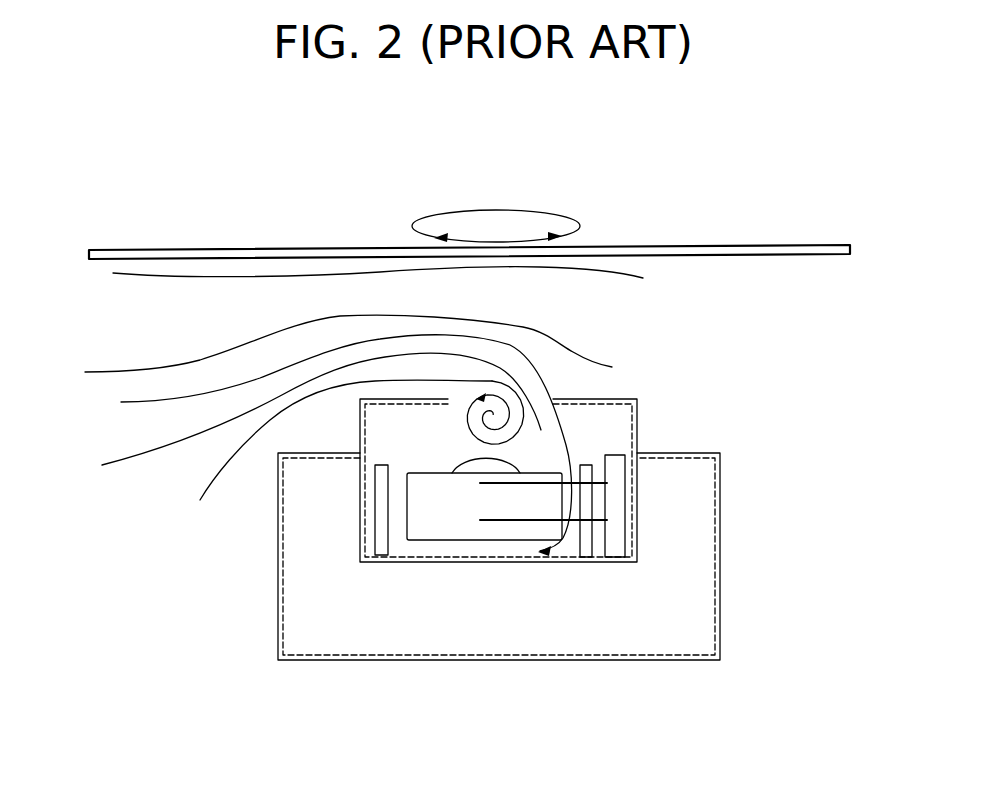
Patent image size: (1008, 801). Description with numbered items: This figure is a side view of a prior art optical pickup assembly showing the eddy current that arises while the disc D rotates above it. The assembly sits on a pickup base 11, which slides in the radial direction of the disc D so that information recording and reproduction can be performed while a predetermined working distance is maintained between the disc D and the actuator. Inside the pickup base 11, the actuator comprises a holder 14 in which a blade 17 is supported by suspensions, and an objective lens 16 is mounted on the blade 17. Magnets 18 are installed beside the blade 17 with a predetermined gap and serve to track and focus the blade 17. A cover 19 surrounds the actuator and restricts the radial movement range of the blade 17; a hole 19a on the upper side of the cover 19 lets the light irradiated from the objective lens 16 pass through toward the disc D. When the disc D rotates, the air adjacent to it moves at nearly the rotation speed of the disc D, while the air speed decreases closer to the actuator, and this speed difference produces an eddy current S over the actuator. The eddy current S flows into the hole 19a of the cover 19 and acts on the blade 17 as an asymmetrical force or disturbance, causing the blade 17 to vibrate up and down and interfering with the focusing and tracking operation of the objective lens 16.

The pickup base 11 is at (720, 610).
The holder 14 is at (617, 545).
The objective lens 16 is at (485, 465).
The blade 17 is at (430, 517).
The magnets 18 is at (383, 521).
The cover 19 is at (640, 418).
The hole 19a is at (553, 396).
The disc D is at (750, 246).
The eddy current S is at (500, 322).